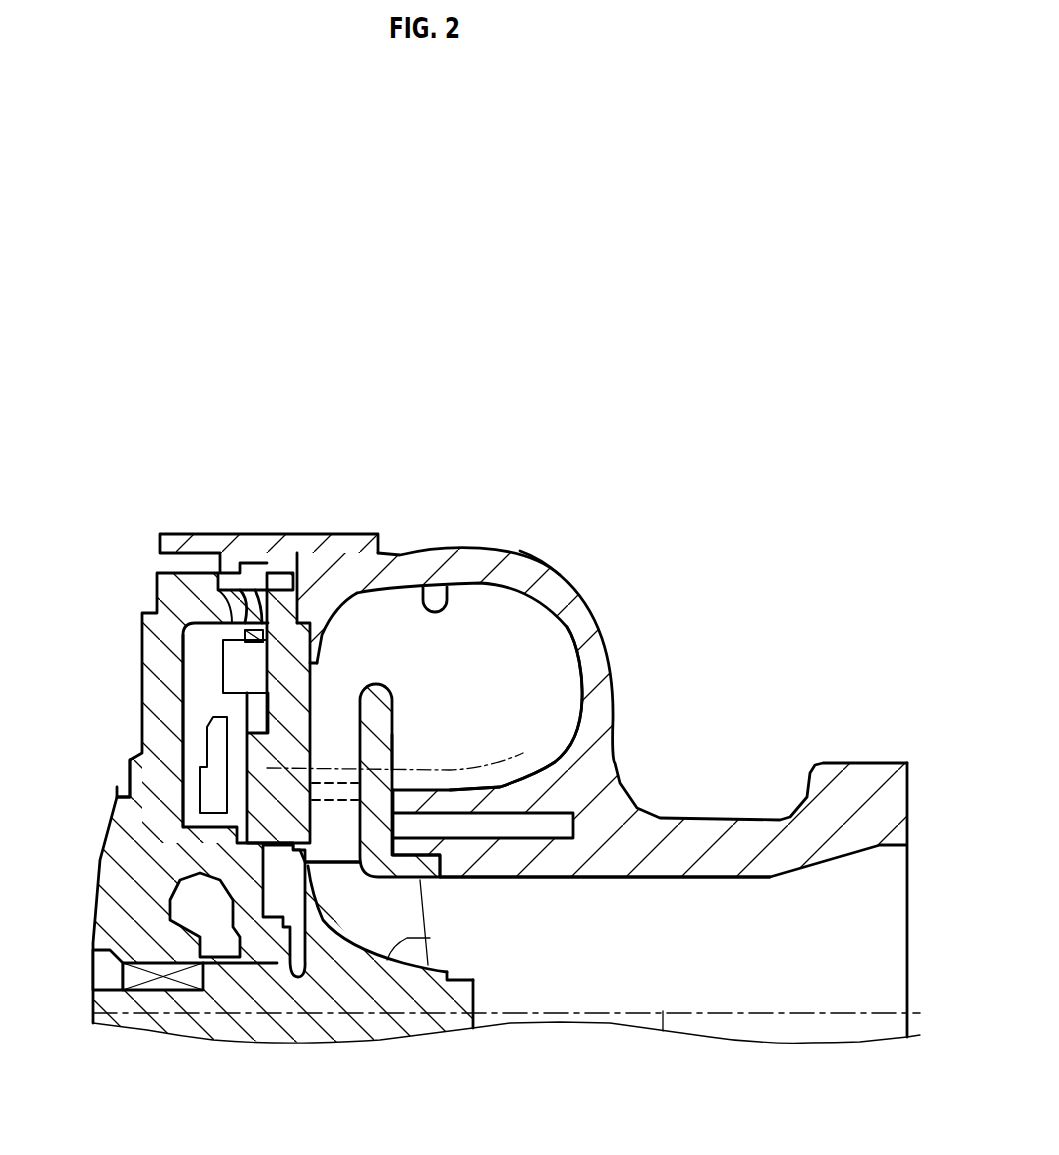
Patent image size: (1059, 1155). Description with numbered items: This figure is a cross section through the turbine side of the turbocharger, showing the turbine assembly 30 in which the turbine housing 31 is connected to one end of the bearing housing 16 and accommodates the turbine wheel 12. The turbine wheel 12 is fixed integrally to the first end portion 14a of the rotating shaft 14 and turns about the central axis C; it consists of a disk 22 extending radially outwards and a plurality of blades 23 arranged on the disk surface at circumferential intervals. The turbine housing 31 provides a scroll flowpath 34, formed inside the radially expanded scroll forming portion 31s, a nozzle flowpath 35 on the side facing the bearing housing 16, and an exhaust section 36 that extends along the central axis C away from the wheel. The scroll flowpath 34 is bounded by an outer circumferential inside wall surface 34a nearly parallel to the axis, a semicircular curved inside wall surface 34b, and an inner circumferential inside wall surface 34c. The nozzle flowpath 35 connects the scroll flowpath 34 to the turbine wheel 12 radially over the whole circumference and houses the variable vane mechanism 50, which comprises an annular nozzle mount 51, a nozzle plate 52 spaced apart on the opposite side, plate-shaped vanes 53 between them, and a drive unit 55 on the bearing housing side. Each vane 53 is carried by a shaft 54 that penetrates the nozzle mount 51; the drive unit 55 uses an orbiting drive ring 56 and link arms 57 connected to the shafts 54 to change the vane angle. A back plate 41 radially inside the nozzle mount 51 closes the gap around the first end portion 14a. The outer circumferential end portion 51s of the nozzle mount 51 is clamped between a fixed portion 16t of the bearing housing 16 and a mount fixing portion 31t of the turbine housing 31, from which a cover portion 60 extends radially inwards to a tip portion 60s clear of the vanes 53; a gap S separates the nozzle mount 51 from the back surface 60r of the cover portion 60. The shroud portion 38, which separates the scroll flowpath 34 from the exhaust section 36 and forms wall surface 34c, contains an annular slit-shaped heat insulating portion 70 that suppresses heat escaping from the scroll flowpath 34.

The turbine wheel 12 is at (450, 968).
The rotating shaft 14 is at (120, 970).
The first end portion 14a is at (477, 990).
The bearing housing 16 is at (140, 693).
The fixed portion 16t is at (238, 534).
The disk 22 is at (387, 953).
The blade 23 is at (430, 943).
The compressor housing 30 is at (584, 580).
The turbine housing 31 is at (600, 628).
The scroll forming portion 31s is at (548, 572).
The mount fixing portion 31t is at (307, 548).
The scroll flowpath 34 is at (562, 697).
The outer circumferential inside wall surface 34a is at (432, 600).
The curved inside wall surface 34b is at (562, 697).
The inner circumferential inside wall surface 34c is at (545, 775).
The nozzle flowpath 35 is at (400, 688).
The exhaust section 36 is at (643, 880).
The shroud portion 38 is at (430, 883).
The back plate 41 is at (313, 880).
The variable vane mechanism 50 is at (176, 808).
The nozzle mount 51 is at (313, 703).
The outer circumferential end portion 51s is at (268, 552).
The nozzle plate 52 is at (395, 735).
The vane 53 is at (395, 752).
The shaft 54 is at (477, 787).
The drive unit 55 is at (205, 733).
The drive ring 56 is at (267, 693).
The link arm 57 is at (200, 750).
The cover portion 60 is at (350, 548).
The back surface 60r is at (225, 592).
The tip portion 60s is at (320, 663).
The heat insulating portion 70 is at (573, 827).
The gap S is at (200, 637).
The central axis C is at (668, 1035).